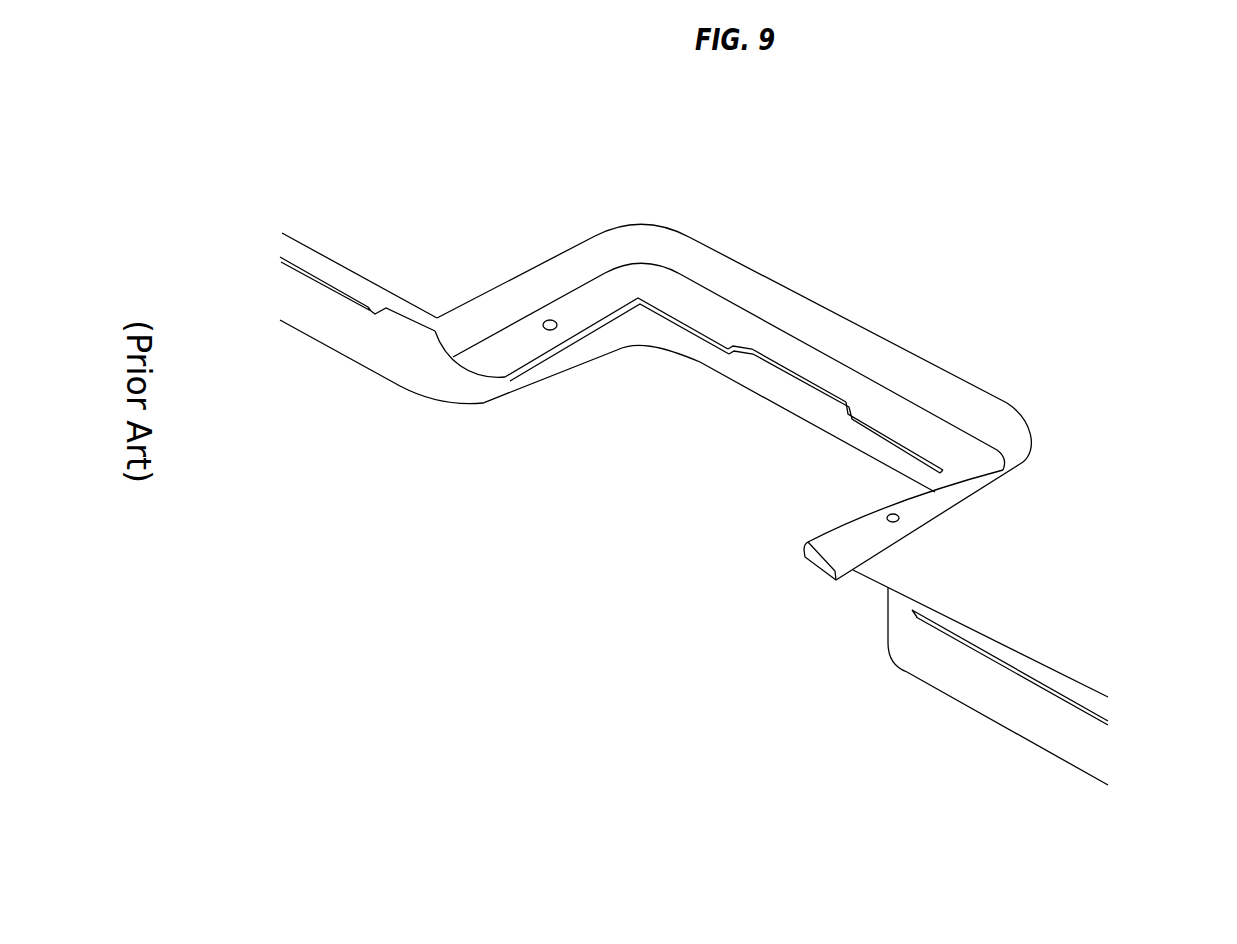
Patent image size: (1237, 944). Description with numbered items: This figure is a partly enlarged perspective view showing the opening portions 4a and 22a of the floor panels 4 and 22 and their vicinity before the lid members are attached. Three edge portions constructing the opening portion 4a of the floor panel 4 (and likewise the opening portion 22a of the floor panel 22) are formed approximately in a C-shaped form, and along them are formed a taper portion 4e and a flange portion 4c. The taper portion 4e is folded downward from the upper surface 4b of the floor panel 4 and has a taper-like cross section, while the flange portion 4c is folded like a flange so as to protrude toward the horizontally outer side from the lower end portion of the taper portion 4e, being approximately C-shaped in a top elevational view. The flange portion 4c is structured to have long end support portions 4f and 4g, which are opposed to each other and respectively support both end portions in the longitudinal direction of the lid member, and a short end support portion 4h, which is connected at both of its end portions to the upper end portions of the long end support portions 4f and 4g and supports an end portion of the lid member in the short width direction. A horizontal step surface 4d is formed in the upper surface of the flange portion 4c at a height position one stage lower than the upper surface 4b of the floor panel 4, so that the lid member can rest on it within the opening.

The floor panel 4 is at (694, 509).
The floor panel 22 is at (367, 367).
The opening portion 4a is at (632, 463).
The opening portion 22a is at (650, 482).
The upper surface 4b is at (603, 138).
The flange portion 4c is at (733, 352).
The horizontal step surface 4d is at (907, 413).
The taper portion 4e is at (720, 283).
The long end support portion 4f is at (507, 343).
The long end support portion 4g is at (917, 503).
The short end support portion 4h is at (812, 365).